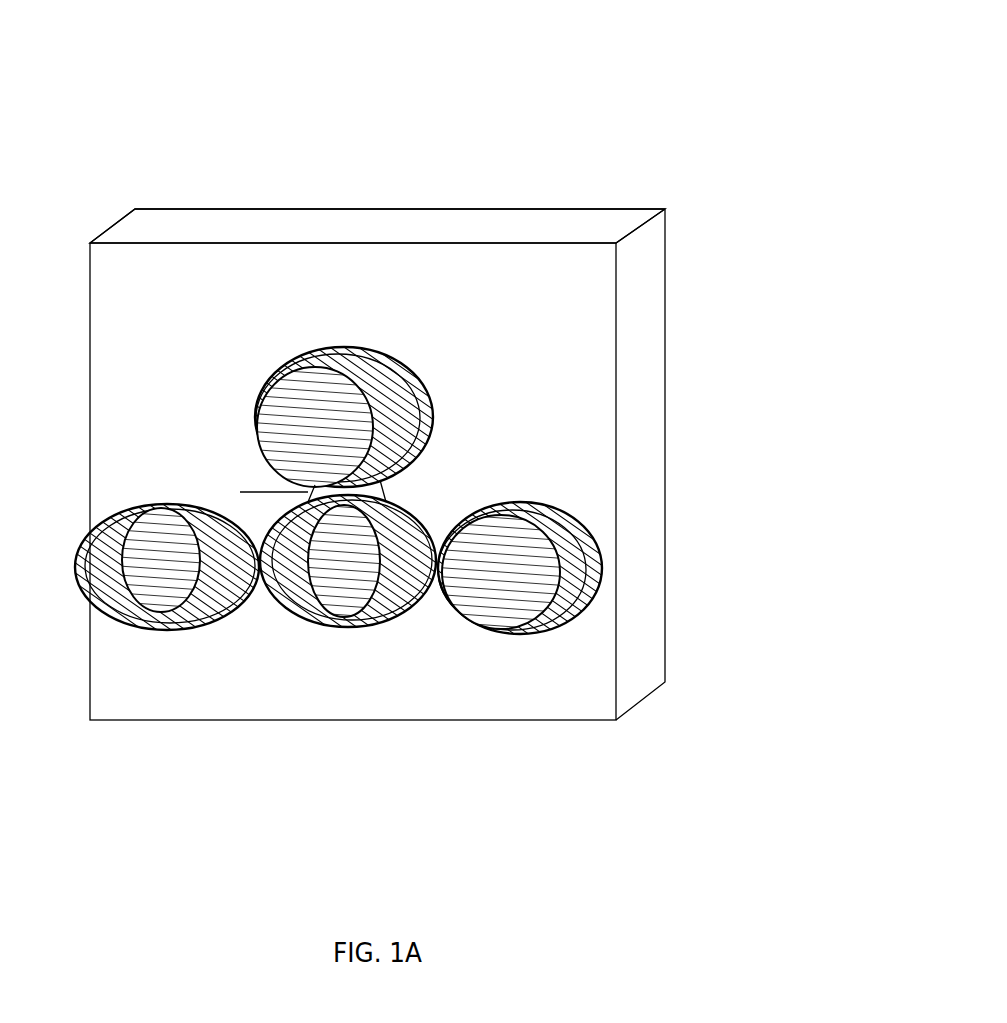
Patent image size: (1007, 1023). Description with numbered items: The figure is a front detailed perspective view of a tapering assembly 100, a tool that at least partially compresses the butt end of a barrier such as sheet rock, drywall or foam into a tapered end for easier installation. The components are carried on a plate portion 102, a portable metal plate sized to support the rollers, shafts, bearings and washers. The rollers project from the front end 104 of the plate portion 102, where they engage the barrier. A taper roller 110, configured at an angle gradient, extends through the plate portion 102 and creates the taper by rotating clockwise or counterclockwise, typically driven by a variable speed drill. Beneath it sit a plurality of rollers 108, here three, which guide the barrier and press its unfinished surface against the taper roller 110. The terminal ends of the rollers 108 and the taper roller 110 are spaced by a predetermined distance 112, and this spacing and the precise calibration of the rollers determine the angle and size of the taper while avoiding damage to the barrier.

The tapering assembly 100 is at (680, 88).
The plate portion 102 is at (665, 456).
The front end 104 is at (507, 285).
The plurality of rollers 108 is at (170, 613).
The taper roller 110 is at (300, 360).
The predetermined distance 112 is at (383, 481).